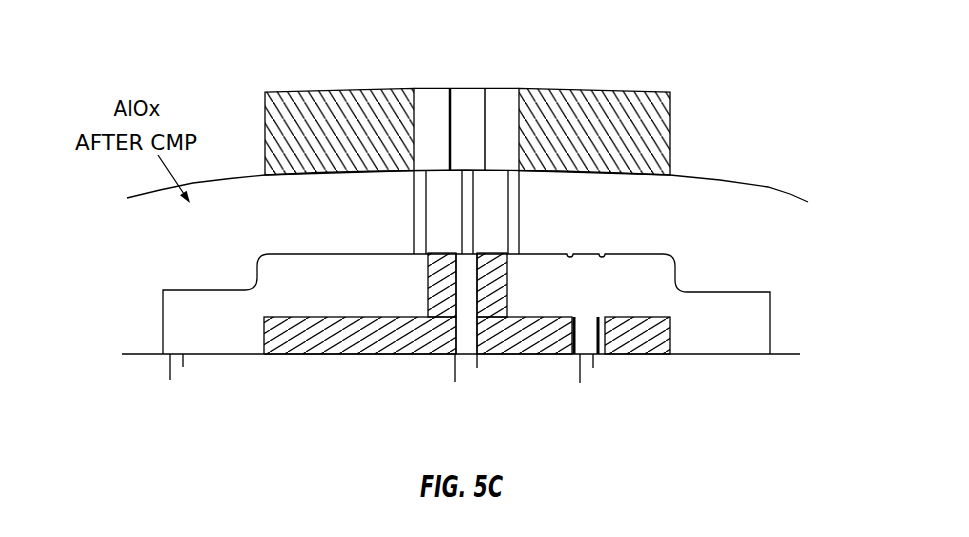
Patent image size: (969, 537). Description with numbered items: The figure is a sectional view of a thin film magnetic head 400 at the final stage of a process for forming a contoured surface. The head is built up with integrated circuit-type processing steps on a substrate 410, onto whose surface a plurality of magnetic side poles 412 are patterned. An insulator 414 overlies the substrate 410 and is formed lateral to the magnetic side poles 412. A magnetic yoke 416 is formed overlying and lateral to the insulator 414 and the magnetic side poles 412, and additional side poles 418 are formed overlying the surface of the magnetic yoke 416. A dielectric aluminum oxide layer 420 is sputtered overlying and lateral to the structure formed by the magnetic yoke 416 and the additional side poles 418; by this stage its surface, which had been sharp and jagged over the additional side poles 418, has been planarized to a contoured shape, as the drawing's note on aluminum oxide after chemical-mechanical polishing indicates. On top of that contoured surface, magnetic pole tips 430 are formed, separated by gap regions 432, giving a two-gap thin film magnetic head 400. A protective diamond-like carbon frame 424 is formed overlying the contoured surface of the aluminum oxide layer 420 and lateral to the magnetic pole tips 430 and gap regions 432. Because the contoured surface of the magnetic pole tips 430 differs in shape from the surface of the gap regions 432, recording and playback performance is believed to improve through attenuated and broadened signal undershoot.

The thin film magnetic head 400 is at (787, 74).
The substrate 410 is at (787, 355).
The magnetic side poles 412 is at (466, 355).
The insulator 414 is at (440, 310).
The magnetic yoke 416 is at (623, 254).
The additional side poles 418 is at (515, 221).
The aluminum oxide layer 420 is at (768, 187).
The diamond-like carbon frame 424 is at (600, 100).
The magnetic pole tips 430 is at (502, 88).
The gap regions 432 is at (482, 133).